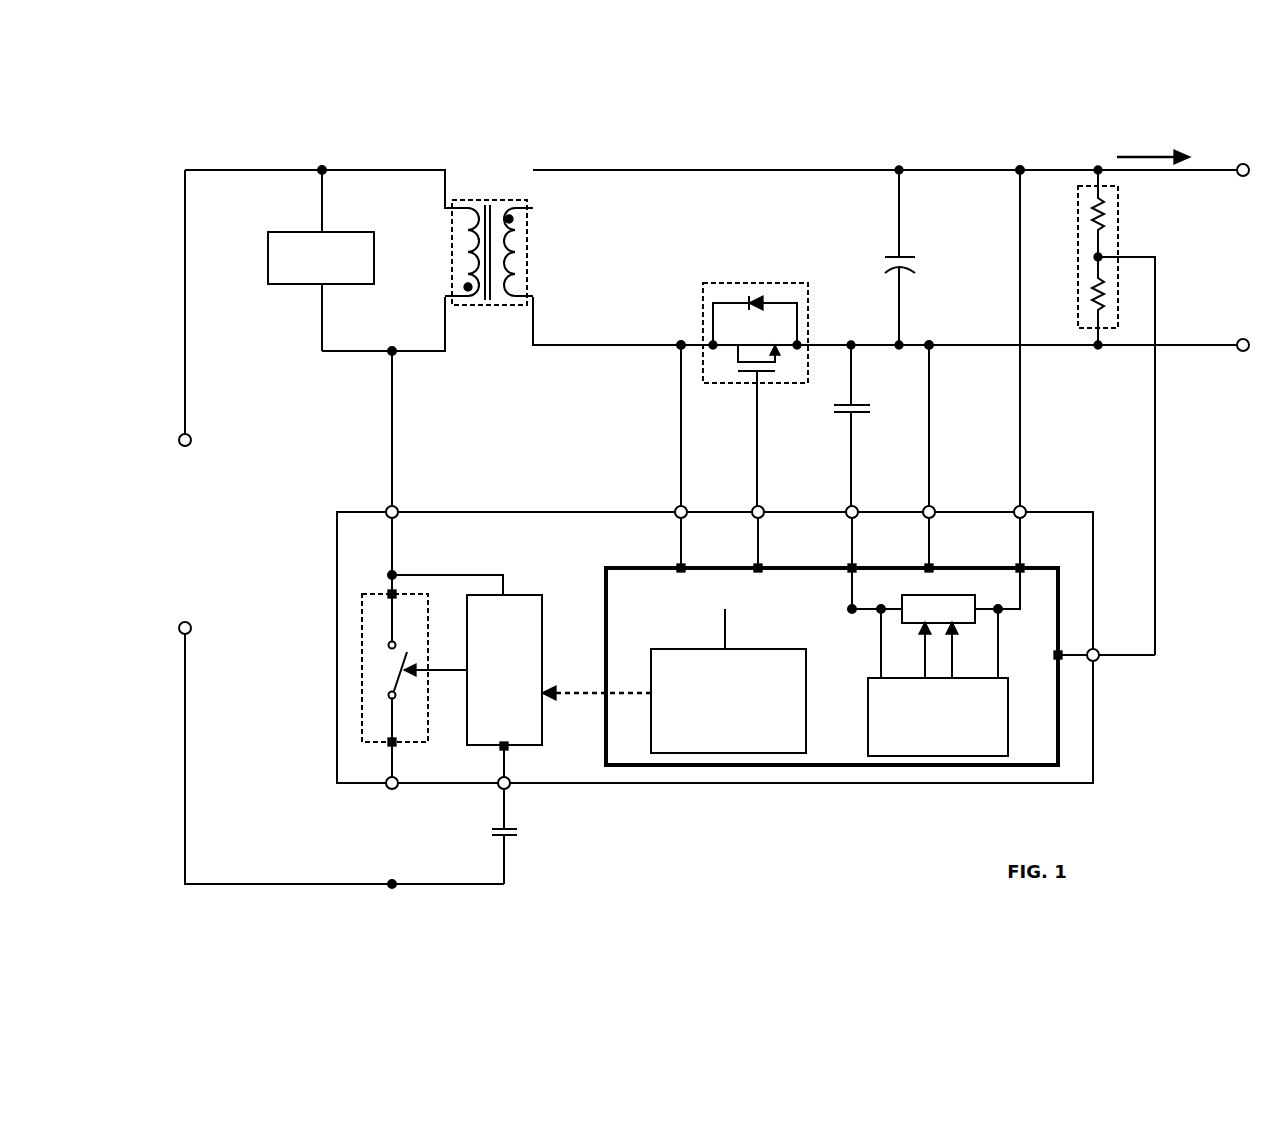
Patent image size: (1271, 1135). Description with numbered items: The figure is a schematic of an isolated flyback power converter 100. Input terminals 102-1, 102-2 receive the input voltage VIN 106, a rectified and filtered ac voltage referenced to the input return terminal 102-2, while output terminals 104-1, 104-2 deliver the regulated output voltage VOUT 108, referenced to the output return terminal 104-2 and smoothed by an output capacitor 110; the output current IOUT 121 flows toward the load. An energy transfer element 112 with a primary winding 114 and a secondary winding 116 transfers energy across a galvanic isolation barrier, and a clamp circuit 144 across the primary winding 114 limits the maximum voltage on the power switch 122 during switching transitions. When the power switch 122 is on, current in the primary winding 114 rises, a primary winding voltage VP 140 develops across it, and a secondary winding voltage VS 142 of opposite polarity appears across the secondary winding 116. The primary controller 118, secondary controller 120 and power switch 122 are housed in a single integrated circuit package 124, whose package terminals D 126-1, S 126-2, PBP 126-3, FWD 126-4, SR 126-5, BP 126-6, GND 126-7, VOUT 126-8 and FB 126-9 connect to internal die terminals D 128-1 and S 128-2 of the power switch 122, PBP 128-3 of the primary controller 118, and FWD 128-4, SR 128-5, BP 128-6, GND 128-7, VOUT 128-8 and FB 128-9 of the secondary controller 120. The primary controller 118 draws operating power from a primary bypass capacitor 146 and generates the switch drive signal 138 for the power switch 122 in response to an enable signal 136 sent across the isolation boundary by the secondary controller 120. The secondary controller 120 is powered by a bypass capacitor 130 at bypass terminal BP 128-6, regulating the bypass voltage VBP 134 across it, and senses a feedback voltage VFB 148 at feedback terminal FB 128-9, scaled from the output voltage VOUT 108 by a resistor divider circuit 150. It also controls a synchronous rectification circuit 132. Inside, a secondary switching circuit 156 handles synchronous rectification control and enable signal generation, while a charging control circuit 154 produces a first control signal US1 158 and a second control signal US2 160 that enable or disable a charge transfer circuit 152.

The power converter 100 is at (723, 109).
The input terminal 102-1 is at (191, 440).
The input terminal 102-2 is at (191, 628).
The output terminal 104-1 is at (1231, 167).
The output terminal 104-2 is at (1231, 342).
The input voltage VIN 106 is at (232, 535).
The output voltage VOUT 108 is at (1229, 247).
The output capacitor 110 is at (916, 263).
The energy transfer element 112 is at (490, 258).
The primary winding 114 is at (460, 305).
The secondary winding 116 is at (510, 305).
The primary controller 118 is at (526, 590).
The secondary controller 120 is at (848, 675).
The output current IOUT 121 is at (1108, 129).
The power switch 122 is at (360, 668).
The integrated circuit package 124 is at (668, 785).
The package terminal D 126-1 is at (396, 506).
The package terminal S 126-2 is at (397, 790).
The package terminal PBP 126-3 is at (509, 790).
The package terminal FWD 126-4 is at (688, 505).
The package terminal SR 126-5 is at (765, 505).
The package terminal BP 126-6 is at (858, 505).
The package terminal GND 126-7 is at (935, 488).
The package terminal VOUT 126-8 is at (1026, 488).
The package terminal FB 126-9 is at (1098, 649).
The terminal D 128-1 is at (388, 591).
The terminal S 128-2 is at (388, 745).
The terminal PBP 128-3 is at (510, 751).
The terminal FWD 128-4 is at (686, 560).
The terminal SR 128-5 is at (763, 560).
The bypass terminal BP 128-6 is at (857, 560).
The GND terminal 128-7 is at (934, 560).
The terminal VOUT 128-8 is at (1025, 560).
The feedback terminal FB 128-9 is at (1064, 661).
The bypass capacitor 130 is at (870, 409).
The synchronous rectification circuit 132 is at (760, 283).
The bypass voltage VBP 134 is at (804, 419).
The enable signal 136 is at (576, 679).
The switch drive signal 138 is at (446, 675).
The primary winding voltage VP 140 is at (424, 235).
The secondary winding voltage VS 142 is at (555, 233).
The clamp circuit 144 is at (266, 258).
The primary bypass capacitor 146 is at (520, 833).
The feedback voltage VFB 148 is at (1188, 653).
The resistor divider circuit 150 is at (1076, 259).
The charge transfer circuit 152 is at (958, 595).
The charging control circuit 154 is at (868, 717).
The secondary switching circuit 156 is at (663, 647).
The first control signal US1 158 is at (973, 660).
The second control signal US2 160 is at (900, 660).